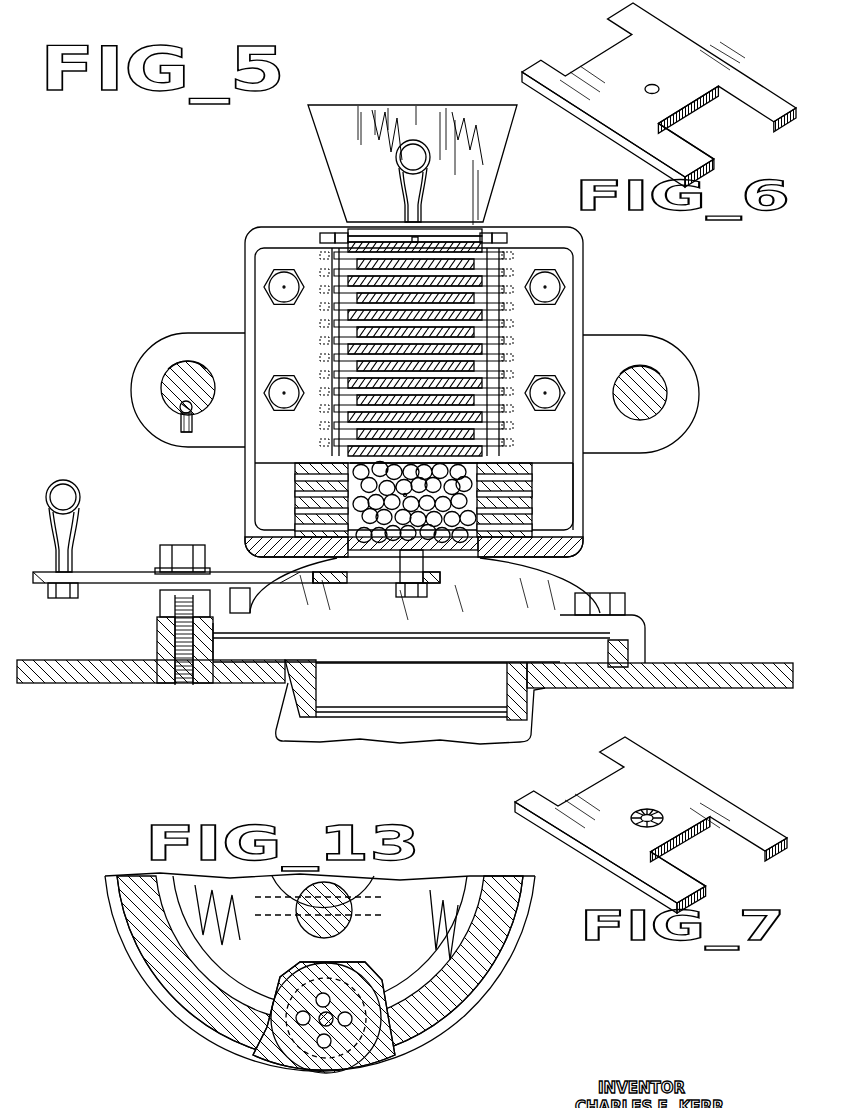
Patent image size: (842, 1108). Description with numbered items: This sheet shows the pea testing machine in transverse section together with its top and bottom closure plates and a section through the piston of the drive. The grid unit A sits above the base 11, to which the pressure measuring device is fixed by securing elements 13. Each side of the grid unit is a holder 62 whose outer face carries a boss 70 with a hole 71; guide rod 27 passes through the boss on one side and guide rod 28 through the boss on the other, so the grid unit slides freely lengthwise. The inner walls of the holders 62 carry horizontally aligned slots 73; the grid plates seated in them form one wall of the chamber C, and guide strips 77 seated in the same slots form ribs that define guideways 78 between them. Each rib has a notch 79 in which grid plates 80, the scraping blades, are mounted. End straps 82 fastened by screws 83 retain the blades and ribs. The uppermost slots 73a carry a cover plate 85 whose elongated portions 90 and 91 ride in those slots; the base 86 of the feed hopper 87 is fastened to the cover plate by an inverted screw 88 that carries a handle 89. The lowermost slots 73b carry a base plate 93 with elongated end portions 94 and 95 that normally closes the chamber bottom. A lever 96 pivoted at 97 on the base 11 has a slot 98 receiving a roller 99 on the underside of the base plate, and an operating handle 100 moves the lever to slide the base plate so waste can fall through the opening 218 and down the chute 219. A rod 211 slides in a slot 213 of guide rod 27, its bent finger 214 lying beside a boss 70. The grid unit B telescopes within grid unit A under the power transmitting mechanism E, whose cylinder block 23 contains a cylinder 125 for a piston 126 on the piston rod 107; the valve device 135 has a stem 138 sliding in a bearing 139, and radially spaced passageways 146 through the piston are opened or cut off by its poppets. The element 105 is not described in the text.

In FIG. 5, the base 11 is at (710, 677).
In FIG. 5, the securing elements 13 is at (246, 600).
In FIG. 13, the cylinder block 23 is at (510, 977).
In FIG. 5, the guide rod 27 is at (170, 386).
In FIG. 5, the guide rod 28 is at (650, 388).
In FIG. 5, the holder 62 is at (252, 235).
In FIG. 5, the boss 70 is at (182, 342).
In FIG. 5, the hole 71 is at (166, 373).
In FIG. 5, the slots or grooves 73 is at (317, 503).
In FIG. 5, the uppermost slots 73a is at (536, 213).
In FIG. 5, the lowermost slots 73b is at (534, 573).
In FIG. 5, the guide strips 77 is at (317, 477).
In FIG. 5, the guideways 78 is at (353, 483).
In FIG. 5, the notch 79 is at (330, 440).
In FIG. 5, the grid plates 80 is at (450, 362).
In FIG. 5, the end straps 82 is at (263, 302).
In FIG. 5, the screws 83 is at (283, 285).
In FIG. 5, the cover plate 85 is at (455, 232).
In FIG. 6, the cover plate 85 is at (665, 70).
In FIG. 5, the base of feed hopper 86 is at (365, 228).
In FIG. 5, the feed hopper 87 is at (455, 99).
In FIG. 5, the inverted screw 88 is at (421, 236).
In FIG. 5, the handle 89 is at (418, 152).
In FIG. 6, the elongated portions 90 is at (540, 72).
In FIG. 5, the elongated portions 91 is at (330, 236).
In FIG. 6, the elongated portions 91 is at (673, 140).
In FIG. 5, the base plate 93 is at (416, 526).
In FIG. 7, the base plate 93 is at (660, 799).
In FIG. 7, the elongated end portions 94 is at (535, 797).
In FIG. 7, the elongated end portions 95 is at (680, 874).
In FIG. 5, the lever 96 is at (141, 575).
In FIG. 5, the pivot 97 is at (187, 548).
In FIG. 5, the slot 98 is at (378, 578).
In FIG. 5, the roller 99 is at (410, 567).
In FIG. 5, the operating handle 100 is at (66, 508).
In FIG. 5, the ball mass 105 is at (418, 442).
In FIG. 13, the piston rod 107 is at (333, 893).
In FIG. 13, the cylinder 125 is at (165, 917).
In FIG. 13, the piston 126 is at (490, 870).
In FIG. 13, the valve device 135 is at (360, 985).
In FIG. 13, the stem 138 is at (303, 1010).
In FIG. 13, the bearing 139 is at (272, 1022).
In FIG. 13, the passageways 146 is at (328, 997).
In FIG. 5, the rod 211 is at (180, 414).
In FIG. 5, the slot 213 is at (193, 410).
In FIG. 5, the finger 214 is at (183, 432).
In FIG. 5, the opening 218 is at (452, 692).
In FIG. 5, the chute 219 is at (453, 732).
In FIG. 5, the grid unit A is at (575, 503).
In FIG. 5, the grid unit B is at (450, 433).
In FIG. 5, the chamber C is at (403, 508).
In FIG. 13, the power transmitting mechanism E is at (160, 993).